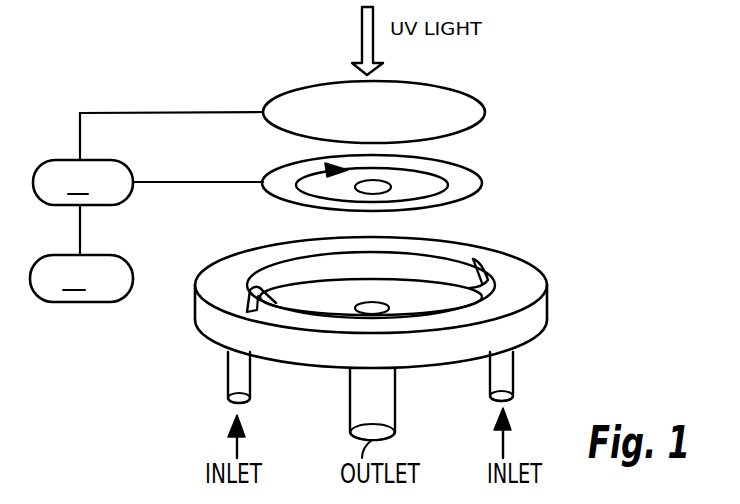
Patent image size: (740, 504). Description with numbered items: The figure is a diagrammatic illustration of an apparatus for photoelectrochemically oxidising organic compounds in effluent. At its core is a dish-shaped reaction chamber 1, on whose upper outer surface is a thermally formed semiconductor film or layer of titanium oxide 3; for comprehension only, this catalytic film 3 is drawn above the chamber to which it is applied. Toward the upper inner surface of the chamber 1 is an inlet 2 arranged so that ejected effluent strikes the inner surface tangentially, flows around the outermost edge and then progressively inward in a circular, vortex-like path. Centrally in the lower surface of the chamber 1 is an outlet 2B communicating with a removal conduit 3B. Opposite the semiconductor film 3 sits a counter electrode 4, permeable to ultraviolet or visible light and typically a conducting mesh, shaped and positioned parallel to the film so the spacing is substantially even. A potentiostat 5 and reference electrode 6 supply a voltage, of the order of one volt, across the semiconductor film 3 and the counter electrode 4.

The reaction chamber 1 is at (547, 318).
The inlet 2 is at (500, 288).
The outlet 2B is at (365, 314).
The semiconductor film or layer of titanium oxide 3 is at (482, 181).
The removal conduit 3B is at (396, 400).
The counter electrode 4 is at (485, 115).
The potentiostat 5 is at (148, 158).
The reference electrode 6 is at (81, 253).